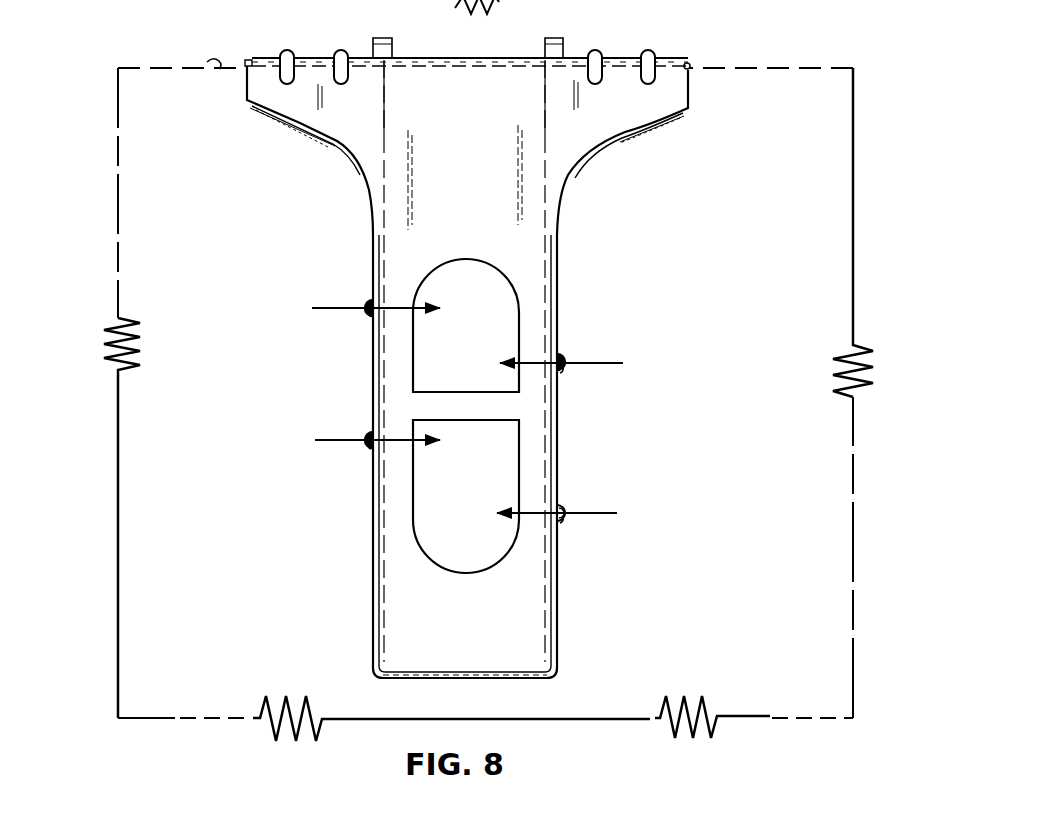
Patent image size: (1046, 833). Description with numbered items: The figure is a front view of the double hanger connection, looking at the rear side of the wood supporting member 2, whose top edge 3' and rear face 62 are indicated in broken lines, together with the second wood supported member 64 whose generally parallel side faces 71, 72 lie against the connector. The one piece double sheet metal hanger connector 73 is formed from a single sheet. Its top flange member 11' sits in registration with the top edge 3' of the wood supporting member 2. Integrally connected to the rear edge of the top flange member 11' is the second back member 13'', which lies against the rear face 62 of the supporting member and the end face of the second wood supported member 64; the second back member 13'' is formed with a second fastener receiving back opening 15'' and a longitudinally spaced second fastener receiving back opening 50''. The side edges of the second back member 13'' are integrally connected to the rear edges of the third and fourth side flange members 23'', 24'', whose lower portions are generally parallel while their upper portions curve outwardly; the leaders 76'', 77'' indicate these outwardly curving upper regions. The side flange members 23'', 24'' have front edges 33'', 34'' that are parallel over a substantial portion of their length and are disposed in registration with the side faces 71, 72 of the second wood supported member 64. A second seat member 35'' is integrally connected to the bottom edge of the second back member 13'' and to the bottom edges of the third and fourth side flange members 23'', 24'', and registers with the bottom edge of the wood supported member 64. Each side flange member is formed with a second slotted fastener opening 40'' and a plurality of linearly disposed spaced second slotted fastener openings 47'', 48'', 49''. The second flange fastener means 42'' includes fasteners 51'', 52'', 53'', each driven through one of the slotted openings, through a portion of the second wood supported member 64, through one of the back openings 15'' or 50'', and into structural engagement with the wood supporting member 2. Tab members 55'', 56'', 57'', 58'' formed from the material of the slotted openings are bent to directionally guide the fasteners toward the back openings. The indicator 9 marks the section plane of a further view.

The wood supporting member 2 is at (195, 55).
The top edge 3' is at (209, 107).
The section line 9- 9 is at (82, 190).
The top flange member 11' is at (466, 47).
The second back member 13'' is at (467, 150).
The second fastener receiving back opening 15'' is at (475, 307).
The third side flange member 23'' is at (377, 456).
The fourth side flange member 24'' is at (628, 456).
The front edge 33'' is at (428, 366).
The front edge 34'' is at (602, 366).
The second seat member 35'' is at (465, 646).
The second slotted fastener opening 40'' is at (338, 482).
The second flange fastener means 42'' is at (345, 415).
The second slotted fastener opening 47'' is at (337, 335).
The second slotted fastener opening 48'' is at (594, 537).
The second slotted fastener opening 49'' is at (593, 331).
The second fastener receiving back opening 50'' is at (462, 510).
The fastener 51'' is at (369, 277).
The fastener 52'' is at (603, 502).
The fastener 53'' is at (594, 336).
The tab member 55'' is at (350, 408).
The tab member 56'' is at (358, 272).
The tab member 57'' is at (599, 494).
The tab member 58'' is at (596, 389).
The rear face 62 is at (182, 240).
The second wood supported member 64 is at (560, 128).
The side face 71 is at (388, 118).
The side face 72 is at (545, 88).
The one piece double sheet metal hanger connector 73 is at (700, 55).
The rolled flange 76'' is at (294, 152).
The rolled flange 77'' is at (638, 154).